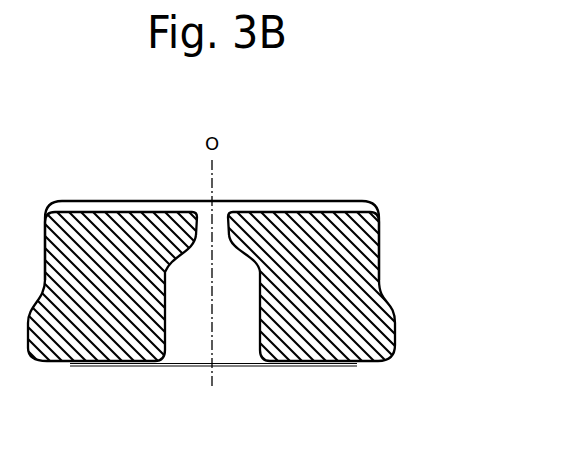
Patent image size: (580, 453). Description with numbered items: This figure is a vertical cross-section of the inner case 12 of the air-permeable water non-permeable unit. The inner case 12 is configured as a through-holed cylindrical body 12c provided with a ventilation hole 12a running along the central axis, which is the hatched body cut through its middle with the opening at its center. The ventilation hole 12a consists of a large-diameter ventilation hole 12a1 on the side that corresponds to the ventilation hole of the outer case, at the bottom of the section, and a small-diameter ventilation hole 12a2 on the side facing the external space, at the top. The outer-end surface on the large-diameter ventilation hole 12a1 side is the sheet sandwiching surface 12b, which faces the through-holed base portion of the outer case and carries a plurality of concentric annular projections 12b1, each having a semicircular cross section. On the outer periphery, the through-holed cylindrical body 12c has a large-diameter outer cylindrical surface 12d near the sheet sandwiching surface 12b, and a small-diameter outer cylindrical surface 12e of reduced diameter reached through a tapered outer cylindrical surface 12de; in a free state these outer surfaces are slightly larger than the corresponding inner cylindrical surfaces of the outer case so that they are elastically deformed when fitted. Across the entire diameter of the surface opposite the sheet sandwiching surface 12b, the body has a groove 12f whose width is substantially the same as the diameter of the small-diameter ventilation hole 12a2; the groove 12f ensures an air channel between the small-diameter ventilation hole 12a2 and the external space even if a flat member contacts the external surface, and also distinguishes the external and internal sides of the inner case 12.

The inner case 12 is at (64, 160).
The ventilation hole 12a is at (165, 324).
The large-diameter ventilation hole 12a1 is at (262, 344).
The small-diameter ventilation hole 12a2 is at (221, 210).
The sheet sandwiching surface 12b is at (370, 363).
The concentric annular projections 12b1 is at (130, 365).
The through-holed cylindrical body 12c is at (122, 215).
The large-diameter outer cylindrical surface 12d is at (396, 335).
The tapered outer cylindrical surface 12de is at (385, 297).
The small-diameter outer cylindrical surface 12e is at (380, 239).
The groove 12f is at (309, 213).